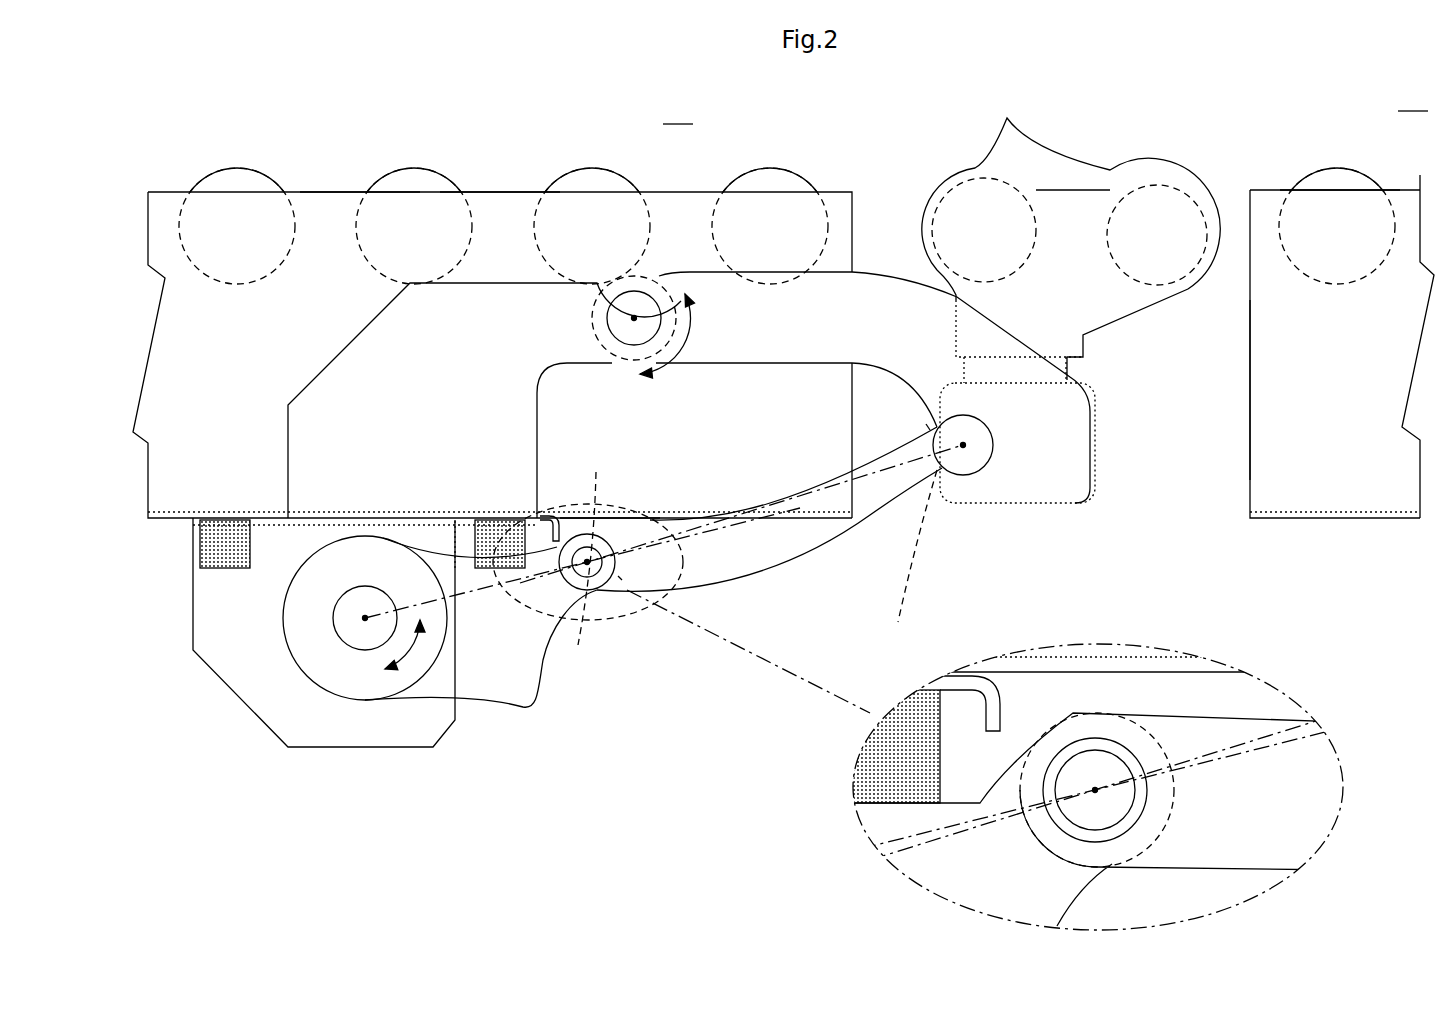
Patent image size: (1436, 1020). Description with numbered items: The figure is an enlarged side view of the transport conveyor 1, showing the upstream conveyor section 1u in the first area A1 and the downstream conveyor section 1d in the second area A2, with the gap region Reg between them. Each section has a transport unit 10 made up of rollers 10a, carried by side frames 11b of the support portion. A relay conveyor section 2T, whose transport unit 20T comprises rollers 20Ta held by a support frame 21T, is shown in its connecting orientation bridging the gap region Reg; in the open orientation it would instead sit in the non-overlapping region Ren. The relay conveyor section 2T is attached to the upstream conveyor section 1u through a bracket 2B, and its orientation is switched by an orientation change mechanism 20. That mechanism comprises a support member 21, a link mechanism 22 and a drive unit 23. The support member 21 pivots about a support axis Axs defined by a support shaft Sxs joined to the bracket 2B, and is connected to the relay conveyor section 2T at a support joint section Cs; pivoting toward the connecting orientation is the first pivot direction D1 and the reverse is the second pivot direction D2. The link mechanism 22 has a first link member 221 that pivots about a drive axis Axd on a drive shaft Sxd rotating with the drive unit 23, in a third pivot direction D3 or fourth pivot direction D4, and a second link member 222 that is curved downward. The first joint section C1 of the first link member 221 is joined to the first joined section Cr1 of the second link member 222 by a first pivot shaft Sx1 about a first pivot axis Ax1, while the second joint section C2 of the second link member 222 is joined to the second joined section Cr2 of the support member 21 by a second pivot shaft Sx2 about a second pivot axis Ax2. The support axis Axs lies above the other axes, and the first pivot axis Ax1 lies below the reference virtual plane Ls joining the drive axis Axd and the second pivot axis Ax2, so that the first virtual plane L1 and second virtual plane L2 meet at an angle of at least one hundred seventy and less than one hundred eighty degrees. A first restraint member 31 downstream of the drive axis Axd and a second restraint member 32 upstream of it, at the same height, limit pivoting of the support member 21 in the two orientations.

The transport conveyor 1 is at (783, 344).
The upstream conveyor section 1u is at (488, 143).
The downstream conveyor section 1d is at (1245, 520).
The transport unit 10 is at (228, 143).
The rollers 10a is at (265, 178).
The side frames 11b is at (497, 183).
The bracket 2B is at (280, 430).
The orientation change mechanism 20 is at (598, 634).
The transport unit 20T is at (1052, 219).
The rollers 20Ta is at (1007, 173).
The relay conveyor section 2T is at (1138, 140).
The support member 21 is at (782, 365).
The support frame 21T is at (1092, 346).
The link mechanism 22 is at (598, 634).
The first link member 221 is at (426, 656).
The second link member 222 is at (713, 561).
The drive unit 23 is at (260, 740).
The first restraint member 31 is at (486, 518).
The second restraint member 32 is at (225, 570).
The first area A1 is at (678, 111).
The second area A2 is at (1413, 98).
The support shaft Sxs is at (610, 284).
The support axis Axs is at (632, 318).
The drive shaft Sxd is at (351, 590).
The drive axis Axd is at (363, 612).
The first pivot shaft Sx1 is at (554, 615).
The first pivot axis Ax1 is at (590, 578).
The second pivot shaft Sx2 is at (1001, 474).
The second pivot axis Ax2 is at (966, 450).
The support joint section Cs is at (1064, 468).
The gap region Reg is at (950, 158).
The first pivot direction D1 is at (684, 328).
The second pivot direction D2 is at (657, 388).
The third pivot direction D3 is at (419, 639).
The fourth pivot direction D4 is at (385, 679).
The first virtual plane L1 is at (527, 603).
The second virtual plane L2 is at (678, 563).
The reference virtual plane Ls is at (603, 525).
The first joined section Cr1 is at (610, 523).
The second joined section Cr2 is at (940, 485).
The first joint section C1 is at (620, 578).
The second joint section C2 is at (926, 424).
The non-overlapping region Ren is at (1165, 755).